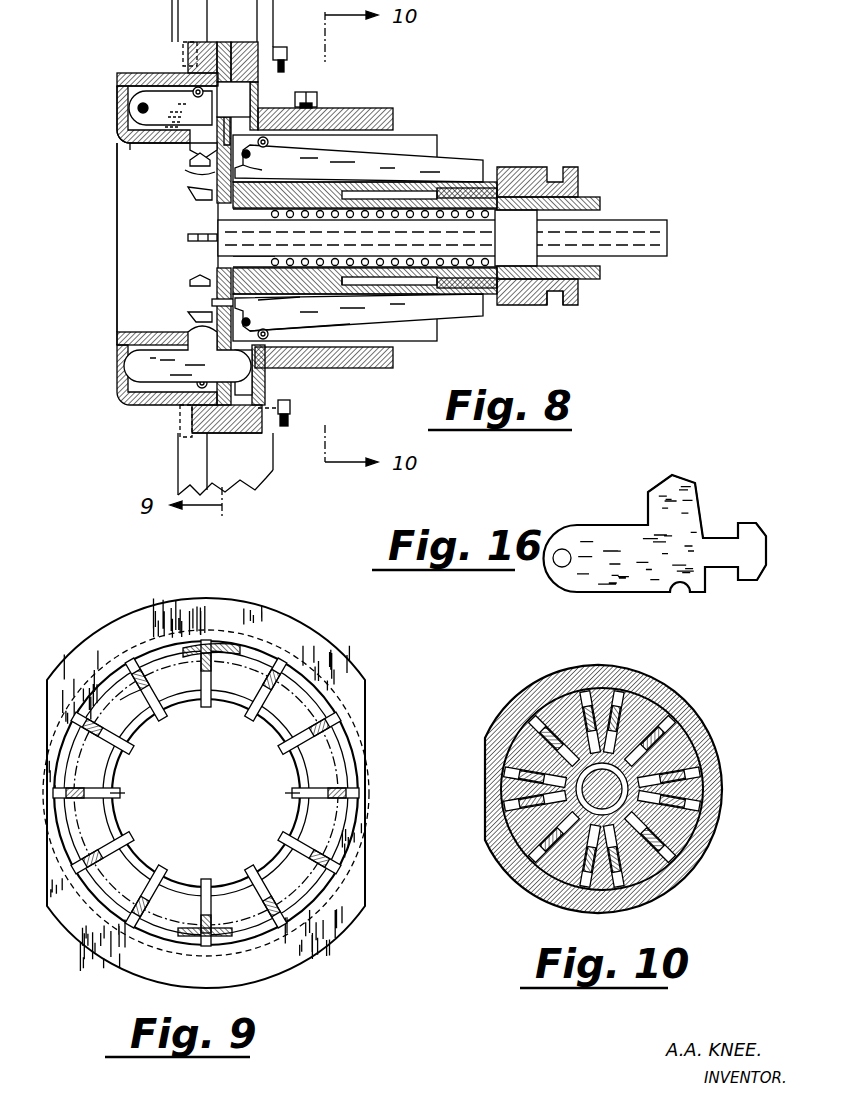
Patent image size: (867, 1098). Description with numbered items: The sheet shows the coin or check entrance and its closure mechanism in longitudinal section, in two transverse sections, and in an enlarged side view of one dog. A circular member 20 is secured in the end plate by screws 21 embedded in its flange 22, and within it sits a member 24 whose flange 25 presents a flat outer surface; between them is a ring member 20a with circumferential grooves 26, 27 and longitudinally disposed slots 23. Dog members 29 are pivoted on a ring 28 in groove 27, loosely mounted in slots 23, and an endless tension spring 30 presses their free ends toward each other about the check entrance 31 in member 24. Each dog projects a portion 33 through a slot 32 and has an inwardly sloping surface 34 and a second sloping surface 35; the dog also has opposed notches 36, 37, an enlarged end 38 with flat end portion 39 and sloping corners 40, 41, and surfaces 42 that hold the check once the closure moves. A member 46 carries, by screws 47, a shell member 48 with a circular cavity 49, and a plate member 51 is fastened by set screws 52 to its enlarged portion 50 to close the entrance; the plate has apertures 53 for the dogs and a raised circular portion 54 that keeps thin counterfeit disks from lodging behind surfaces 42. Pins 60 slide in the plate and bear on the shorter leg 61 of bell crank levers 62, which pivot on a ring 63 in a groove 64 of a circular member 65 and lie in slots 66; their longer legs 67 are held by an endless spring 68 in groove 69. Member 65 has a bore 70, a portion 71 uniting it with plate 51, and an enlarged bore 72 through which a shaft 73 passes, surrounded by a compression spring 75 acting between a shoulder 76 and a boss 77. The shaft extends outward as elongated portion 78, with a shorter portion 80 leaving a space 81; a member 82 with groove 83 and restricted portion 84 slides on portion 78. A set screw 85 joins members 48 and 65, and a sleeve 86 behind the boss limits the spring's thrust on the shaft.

In FIG. 8, the circular member 20 is at (117, 80).
In FIG. 9, the circular member 20 is at (262, 632).
In FIG. 9, the ring member 20a is at (125, 712).
In FIG. 8, the screws 21 is at (183, 50).
In FIG. 8, the flange 22 is at (200, 42).
In FIG. 9, the flange 22 is at (300, 612).
In FIG. 8, the slots 23 is at (170, 73).
In FIG. 9, the slots 23 is at (130, 660).
In FIG. 8, the member 24 is at (120, 132).
In FIG. 9, the member 24 is at (278, 728).
In FIG. 8, the flange 25 is at (117, 112).
In FIG. 8, the circumferential groove 26 is at (195, 92).
In FIG. 8, the circumferential groove 27 is at (158, 87).
In FIG. 8, the ring 28 is at (142, 143).
In FIG. 8, the dog members 29 is at (188, 162).
In FIG. 16, the dog members 29 is at (605, 545).
In FIG. 9, the dog members 29 is at (127, 795).
In FIG. 8, the endless tension spring 30 is at (187, 115).
In FIG. 9, the endless tension spring 30 is at (222, 657).
In FIG. 8, the check entrance 31 is at (117, 246).
In FIG. 9, the check entrance 31 is at (206, 793).
In FIG. 8, the slot 32 is at (190, 340).
In FIG. 16, the portion of dog 33 is at (676, 475).
In FIG. 16, the inwardly sloping surface 34 is at (654, 488).
In FIG. 16, the sloping surface 35 is at (689, 481).
In FIG. 16, the notch 36 is at (718, 570).
In FIG. 16, the notch 37 is at (717, 538).
In FIG. 16, the enlarged end 38 is at (754, 545).
In FIG. 16, the flat end portion 39 is at (768, 552).
In FIG. 16, the sloping corner portion 40 is at (748, 523).
In FIG. 16, the sloping corner portion 41 is at (762, 575).
In FIG. 16, the surfaces 42 is at (700, 520).
In FIG. 8, the member 46 is at (268, 478).
In FIG. 8, the screws 47 is at (282, 47).
In FIG. 8, the shell member 48 is at (392, 368).
In FIG. 10, the shell member 48 is at (704, 710).
In FIG. 8, the circular cavity 49 is at (262, 393).
In FIG. 8, the enlarged portion 50 is at (258, 433).
In FIG. 8, the plate member 51 is at (224, 42).
In FIG. 8, the set screws 52 is at (245, 42).
In FIG. 8, the apertures 53 is at (258, 100).
In FIG. 8, the raised circular surface portion 54 is at (212, 172).
In FIG. 8, the pins 60 is at (212, 302).
In FIG. 8, the shorter leg portion 61 is at (250, 166).
In FIG. 8, the bell crank levers 62 is at (425, 142).
In FIG. 10, the bell crank levers 62 is at (612, 718).
In FIG. 8, the ring 63 is at (252, 324).
In FIG. 8, the circumferential groove 64 is at (324, 357).
In FIG. 8, the circular member 65 is at (440, 343).
In FIG. 10, the circular member 65 is at (716, 780).
In FIG. 10, the slots 66 is at (680, 690).
In FIG. 8, the longer leg 67 is at (485, 330).
In FIG. 8, the endless tension spring 68 is at (286, 312).
In FIG. 8, the circumferential groove 69 is at (300, 336).
In FIG. 8, the circular bore 70 is at (218, 222).
In FIG. 8, the portion 71 is at (218, 262).
In FIG. 8, the enlarged bore 72 is at (360, 216).
In FIG. 8, the shaft 73 is at (662, 220).
In FIG. 10, the shaft 73 is at (608, 808).
In FIG. 8, the compression spring 75 is at (403, 216).
In FIG. 10, the compression spring 75 is at (598, 763).
In FIG. 8, the shoulder 76 is at (280, 262).
In FIG. 8, the boss 77 is at (495, 230).
In FIG. 8, the elongated circular portion 78 is at (580, 290).
In FIG. 8, the shorter elongated portion 80 is at (400, 292).
In FIG. 8, the space 81 is at (386, 292).
In FIG. 8, the member 82 is at (546, 305).
In FIG. 8, the circumferential groove 83 is at (558, 305).
In FIG. 8, the restricted circular portion 84 is at (456, 292).
In FIG. 8, the set screw 85 is at (318, 97).
In FIG. 8, the sleeve 86 is at (600, 203).